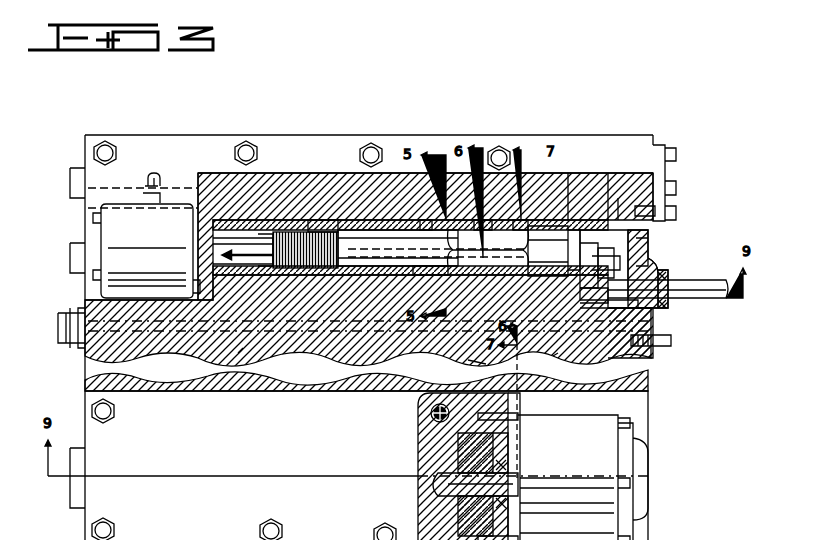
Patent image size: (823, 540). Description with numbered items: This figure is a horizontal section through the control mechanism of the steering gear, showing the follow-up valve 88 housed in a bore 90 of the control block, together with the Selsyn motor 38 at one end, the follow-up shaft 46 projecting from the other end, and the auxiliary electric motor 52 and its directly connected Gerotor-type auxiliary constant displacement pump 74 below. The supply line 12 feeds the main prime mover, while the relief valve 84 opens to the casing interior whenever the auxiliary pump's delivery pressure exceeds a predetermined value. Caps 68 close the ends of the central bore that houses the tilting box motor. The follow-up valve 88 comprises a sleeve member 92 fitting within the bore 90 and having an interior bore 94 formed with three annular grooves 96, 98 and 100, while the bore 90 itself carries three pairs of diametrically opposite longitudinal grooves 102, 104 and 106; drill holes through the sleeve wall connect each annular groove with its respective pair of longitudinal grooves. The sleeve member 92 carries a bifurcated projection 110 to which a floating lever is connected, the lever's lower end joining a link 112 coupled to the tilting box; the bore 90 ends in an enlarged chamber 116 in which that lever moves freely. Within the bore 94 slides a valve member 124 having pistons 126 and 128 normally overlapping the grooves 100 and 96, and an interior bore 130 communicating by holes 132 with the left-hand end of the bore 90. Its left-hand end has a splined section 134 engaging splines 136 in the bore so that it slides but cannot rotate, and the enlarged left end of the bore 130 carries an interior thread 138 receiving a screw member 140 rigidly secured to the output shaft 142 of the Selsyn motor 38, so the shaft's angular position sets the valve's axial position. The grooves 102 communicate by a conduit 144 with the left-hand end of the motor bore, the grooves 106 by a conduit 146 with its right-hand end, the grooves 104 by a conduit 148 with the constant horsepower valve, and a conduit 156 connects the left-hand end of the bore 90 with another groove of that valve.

The supply line 12 is at (455, 362).
The Selsyn motor 38 is at (146, 238).
The follow-up shaft 46 is at (706, 292).
The auxiliary electric motor 52 is at (580, 445).
The caps 68 is at (66, 338).
The auxiliary constant displacement pump 74 is at (490, 448).
The relief valve 84 is at (423, 405).
The follow-up valve 88 is at (598, 200).
The bore 90 is at (627, 196).
The sleeve member 92 is at (580, 230).
The interior bore 94 is at (608, 185).
The annular groove 96 is at (420, 272).
The annular groove 98 is at (472, 205).
The annular groove 100 is at (562, 212).
The longitudinal grooves 102 is at (418, 166).
The longitudinal grooves 104 is at (535, 194).
The longitudinal grooves 106 is at (555, 251).
The bifurcated projection 110 is at (608, 258).
The link 112 is at (596, 282).
The enlarged chamber 116 is at (636, 232).
The valve member 124 is at (440, 262).
The piston 126 is at (548, 251).
The piston 128 is at (460, 360).
The interior bore 130 is at (438, 250).
The holes 132 is at (340, 222).
The splined section 134 is at (275, 222).
The splines 136 is at (175, 224).
The interior thread 138 is at (330, 224).
The screw member 140 is at (258, 235).
The output shaft 142 is at (247, 261).
The conduit 144 is at (238, 336).
The conduit 146 is at (552, 347).
The conduit 148 is at (158, 185).
The conduit 156 is at (322, 165).